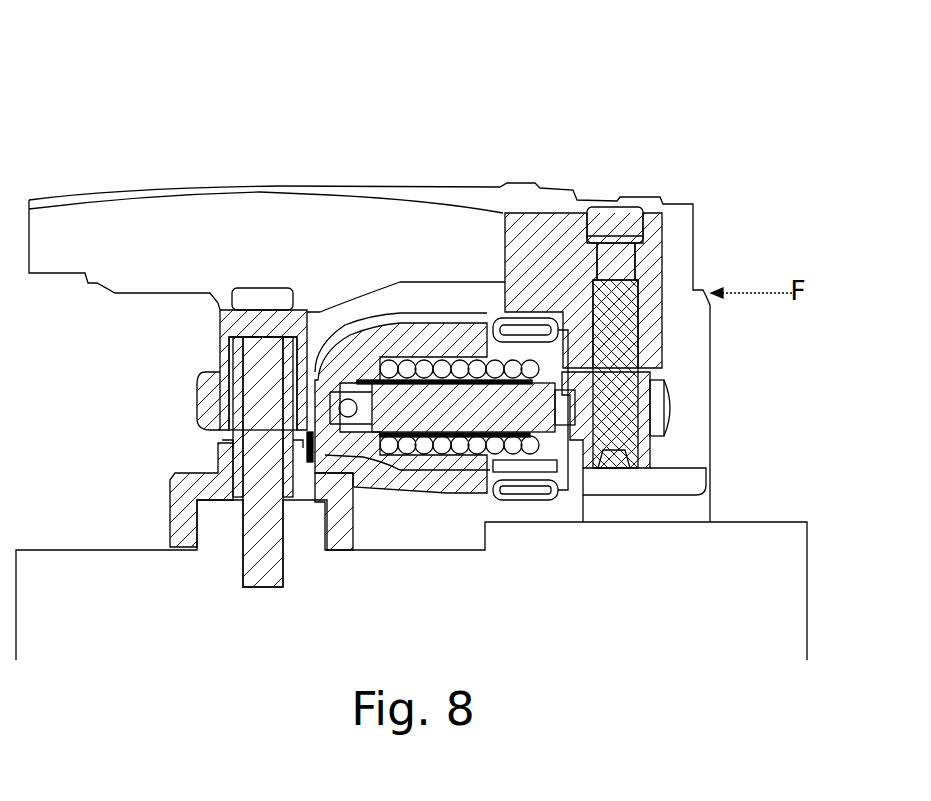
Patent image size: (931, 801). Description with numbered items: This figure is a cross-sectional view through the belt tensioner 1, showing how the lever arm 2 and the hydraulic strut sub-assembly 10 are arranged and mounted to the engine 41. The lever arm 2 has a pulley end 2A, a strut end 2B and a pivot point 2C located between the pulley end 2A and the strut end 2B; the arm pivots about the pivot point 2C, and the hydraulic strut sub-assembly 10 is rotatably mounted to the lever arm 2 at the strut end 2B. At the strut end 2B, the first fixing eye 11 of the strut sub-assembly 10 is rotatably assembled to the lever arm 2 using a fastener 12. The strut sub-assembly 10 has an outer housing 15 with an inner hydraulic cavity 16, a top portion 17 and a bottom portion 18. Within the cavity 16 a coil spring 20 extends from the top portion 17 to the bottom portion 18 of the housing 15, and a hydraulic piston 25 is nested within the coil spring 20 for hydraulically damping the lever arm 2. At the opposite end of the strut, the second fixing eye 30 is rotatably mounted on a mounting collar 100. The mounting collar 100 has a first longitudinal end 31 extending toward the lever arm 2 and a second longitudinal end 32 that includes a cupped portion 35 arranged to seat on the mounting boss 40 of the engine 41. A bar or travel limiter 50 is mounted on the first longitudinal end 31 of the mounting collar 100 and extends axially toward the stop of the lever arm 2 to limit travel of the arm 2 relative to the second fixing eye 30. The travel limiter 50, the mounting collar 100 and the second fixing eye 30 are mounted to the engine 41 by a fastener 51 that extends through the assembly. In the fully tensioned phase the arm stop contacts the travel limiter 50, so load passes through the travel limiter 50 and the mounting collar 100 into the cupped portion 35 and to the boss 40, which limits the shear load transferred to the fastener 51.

The belt tensioner 1 is at (486, 80).
The lever arm 2 is at (183, 200).
The pulley end 2A is at (55, 200).
The strut end 2B is at (547, 230).
The pivot point 2C is at (690, 477).
The hydraulic strut sub-assembly 10 is at (428, 502).
The first fixing eye 11 is at (668, 404).
The fastener 12 is at (648, 455).
The outer housing 15 is at (458, 485).
The inner hydraulic cavity 16 is at (402, 478).
The top portion 17 is at (575, 415).
The bottom portion 18 is at (332, 410).
The coil spring 20 is at (476, 405).
The hydraulic piston 25 is at (430, 397).
The second fixing eye 30 is at (233, 382).
The first longitudinal end 31 is at (233, 318).
The second longitudinal end 32 is at (200, 517).
The cupped portion 35 is at (230, 500).
The mounting boss 40 is at (205, 530).
The engine 41 is at (744, 658).
The travel limiter 50 is at (353, 315).
The fastener 51 is at (257, 352).
The mounting collar 100 is at (212, 492).